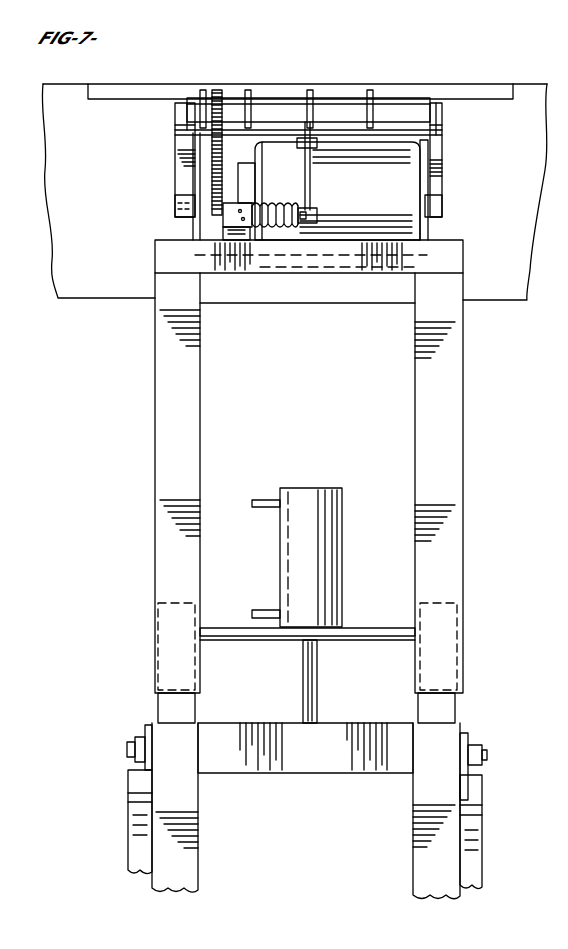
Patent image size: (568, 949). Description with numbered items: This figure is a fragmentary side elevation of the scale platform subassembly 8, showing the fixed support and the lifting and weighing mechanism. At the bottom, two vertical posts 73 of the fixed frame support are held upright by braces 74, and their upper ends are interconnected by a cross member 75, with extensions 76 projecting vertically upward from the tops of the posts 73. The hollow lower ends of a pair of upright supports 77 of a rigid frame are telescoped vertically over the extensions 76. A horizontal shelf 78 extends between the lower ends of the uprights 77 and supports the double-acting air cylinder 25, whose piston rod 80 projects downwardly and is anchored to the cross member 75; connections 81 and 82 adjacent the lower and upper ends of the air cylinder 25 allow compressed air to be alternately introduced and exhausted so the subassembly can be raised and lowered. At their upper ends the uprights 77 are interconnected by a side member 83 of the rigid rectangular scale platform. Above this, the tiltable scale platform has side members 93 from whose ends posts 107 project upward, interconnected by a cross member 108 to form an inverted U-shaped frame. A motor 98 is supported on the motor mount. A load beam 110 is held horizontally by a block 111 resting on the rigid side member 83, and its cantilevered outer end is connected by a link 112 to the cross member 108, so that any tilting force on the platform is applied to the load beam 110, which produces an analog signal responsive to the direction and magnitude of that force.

The scale platform subassembly 8 is at (370, 72).
The double-acting air cylinder 25 is at (342, 527).
The vertical posts 73 is at (198, 870).
The braces 74 is at (128, 838).
The cross member 75 is at (290, 775).
The extensions 76 is at (157, 652).
The upright supports 77 is at (200, 404).
The horizontal shelf 78 is at (352, 628).
The piston rod 80 is at (317, 692).
The connection 81 is at (262, 612).
The connection 82 is at (252, 504).
The side member 83 is at (337, 298).
The side members 93 is at (178, 203).
The motor 98 is at (398, 193).
The posts 107 is at (178, 158).
The cross member 108 is at (407, 135).
The load beam 110 is at (258, 204).
The block 111 is at (228, 215).
The link 112 is at (310, 183).